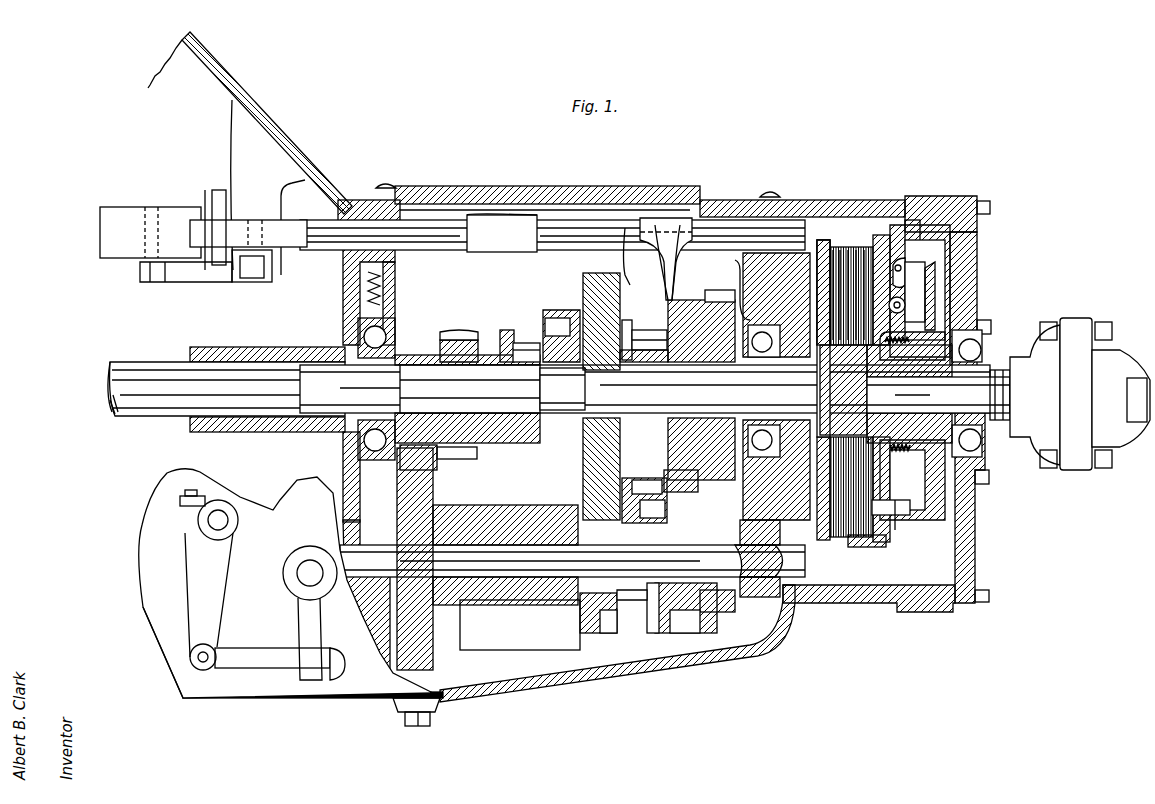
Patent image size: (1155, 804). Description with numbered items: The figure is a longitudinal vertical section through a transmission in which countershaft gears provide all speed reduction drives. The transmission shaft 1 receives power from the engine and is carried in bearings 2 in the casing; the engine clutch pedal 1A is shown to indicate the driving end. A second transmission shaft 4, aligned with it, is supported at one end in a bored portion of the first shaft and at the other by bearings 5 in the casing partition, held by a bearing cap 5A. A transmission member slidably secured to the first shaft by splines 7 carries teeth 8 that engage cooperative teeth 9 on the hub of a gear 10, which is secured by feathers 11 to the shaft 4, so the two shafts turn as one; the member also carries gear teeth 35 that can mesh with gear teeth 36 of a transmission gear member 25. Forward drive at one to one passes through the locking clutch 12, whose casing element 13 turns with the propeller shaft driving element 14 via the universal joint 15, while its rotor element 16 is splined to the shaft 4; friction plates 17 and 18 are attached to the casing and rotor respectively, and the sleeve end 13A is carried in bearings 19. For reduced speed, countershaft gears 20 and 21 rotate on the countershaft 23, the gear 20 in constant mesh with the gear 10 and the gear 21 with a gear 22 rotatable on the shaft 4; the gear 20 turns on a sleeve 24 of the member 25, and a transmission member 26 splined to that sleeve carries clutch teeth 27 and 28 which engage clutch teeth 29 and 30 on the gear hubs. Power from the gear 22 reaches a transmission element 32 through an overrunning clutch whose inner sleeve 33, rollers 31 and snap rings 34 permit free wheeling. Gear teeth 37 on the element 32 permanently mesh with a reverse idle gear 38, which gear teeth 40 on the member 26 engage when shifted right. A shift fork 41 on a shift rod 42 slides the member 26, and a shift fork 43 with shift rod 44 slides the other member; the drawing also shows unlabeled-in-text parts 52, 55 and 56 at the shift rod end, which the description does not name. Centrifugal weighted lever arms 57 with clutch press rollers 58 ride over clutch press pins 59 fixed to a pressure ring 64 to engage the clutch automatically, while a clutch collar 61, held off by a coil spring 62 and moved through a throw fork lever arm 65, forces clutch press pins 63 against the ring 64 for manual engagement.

The transmission shaft 1 is at (152, 368).
The engine clutch pedal 1A is at (285, 540).
The bearings 2 is at (366, 337).
The transmission shaft 4 is at (430, 380).
The bearings 5 is at (775, 336).
The bearing cap 5A is at (806, 262).
The splines 7 is at (424, 360).
The teeth 8 is at (512, 330).
The teeth 9 is at (538, 342).
The gear 10 is at (560, 305).
The feathers 11 is at (545, 388).
The locking clutch 12 is at (876, 240).
The casing element 13 is at (828, 250).
The sleeve end 13A is at (890, 240).
The propeller shaft driving element 14 is at (1140, 370).
The universal joint 15 is at (1103, 470).
The rotor element 16 is at (935, 455).
The friction plates 17 is at (840, 540).
The friction plates 18 is at (855, 540).
The bearings 19 is at (975, 340).
The countershaft gear 20 is at (605, 635).
The countershaft gear 21 is at (585, 640).
The gear 22 is at (603, 290).
The countershaft 23 is at (475, 580).
The sleeve 24 is at (476, 525).
The transmission gear member 25 is at (425, 520).
The transmission member 26 is at (740, 632).
The clutch teeth 27 is at (690, 635).
The clutch teeth 28 is at (670, 635).
The clutch teeth 29 is at (646, 500).
The clutch teeth 30 is at (635, 660).
The rollers 31 is at (648, 330).
The transmission element 32 is at (700, 320).
The sleeve 33 is at (640, 500).
The snap rings 34 is at (627, 322).
The gear teeth 35 is at (448, 334).
The gear teeth 36 is at (440, 458).
The gear teeth 37 is at (720, 295).
The reverse idle gear 38 is at (690, 500).
The gear teeth 40 is at (715, 615).
The shift fork 41 is at (676, 292).
The shift rod 42 is at (340, 205).
The shift fork 43 is at (486, 268).
The shift rod 44 is at (120, 212).
The nut 52 is at (275, 270).
The bracket 55 is at (190, 278).
The shift rail support 56 is at (208, 205).
The weighted lever arms 57 is at (925, 275).
The clutch press rollers 58 is at (905, 305).
The clutch press pins 59 is at (898, 258).
The clutch collar 61 is at (950, 330).
The coil spring 62 is at (905, 500).
The clutch press pins 63 is at (885, 530).
The pressure ring 64 is at (860, 548).
The throw fork lever arm 65 is at (955, 250).